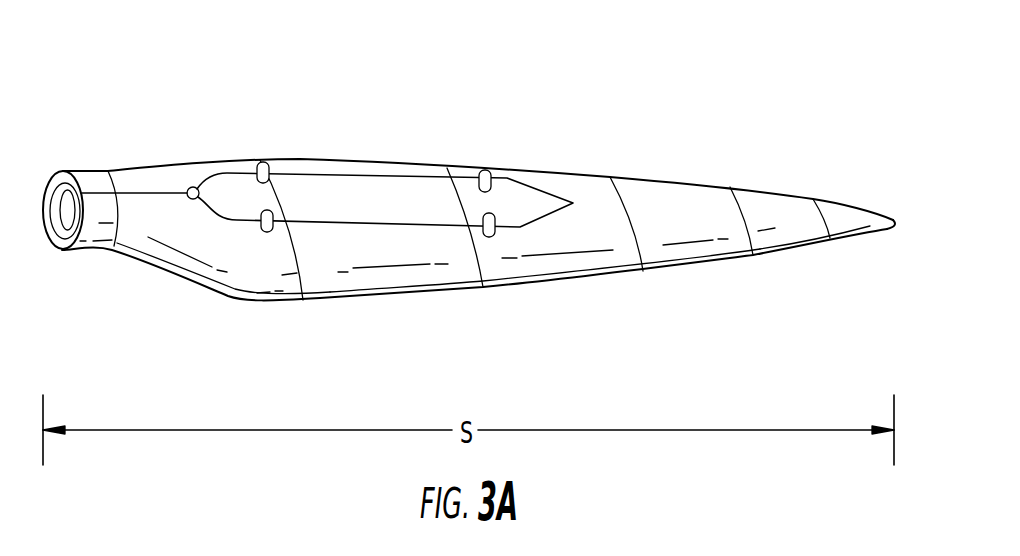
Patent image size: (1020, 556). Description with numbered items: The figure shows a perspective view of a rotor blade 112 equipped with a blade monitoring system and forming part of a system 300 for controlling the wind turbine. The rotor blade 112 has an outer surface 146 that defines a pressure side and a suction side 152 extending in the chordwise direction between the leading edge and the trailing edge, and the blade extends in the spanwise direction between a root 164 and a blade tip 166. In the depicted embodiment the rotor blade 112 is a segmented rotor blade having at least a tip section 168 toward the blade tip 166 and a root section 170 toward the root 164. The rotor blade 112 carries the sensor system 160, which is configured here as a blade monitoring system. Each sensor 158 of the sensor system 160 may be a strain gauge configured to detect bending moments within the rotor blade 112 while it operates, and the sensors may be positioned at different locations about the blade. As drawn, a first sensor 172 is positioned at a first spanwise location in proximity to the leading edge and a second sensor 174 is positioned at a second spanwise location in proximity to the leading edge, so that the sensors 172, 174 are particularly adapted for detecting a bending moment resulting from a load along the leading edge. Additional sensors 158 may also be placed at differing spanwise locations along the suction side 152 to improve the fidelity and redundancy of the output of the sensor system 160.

The system 300 is at (392, 57).
The rotor blade 112 is at (103, 133).
The root section 170 is at (172, 148).
The root 164 is at (82, 268).
The blade tip 166 is at (863, 193).
The tip section 168 is at (850, 255).
The outer surface 146 is at (688, 197).
The suction side 152 is at (707, 247).
The sensor system 160 is at (388, 160).
The sensor 158 is at (266, 233).
The first sensor 172 is at (263, 162).
The second sensor 174 is at (485, 170).